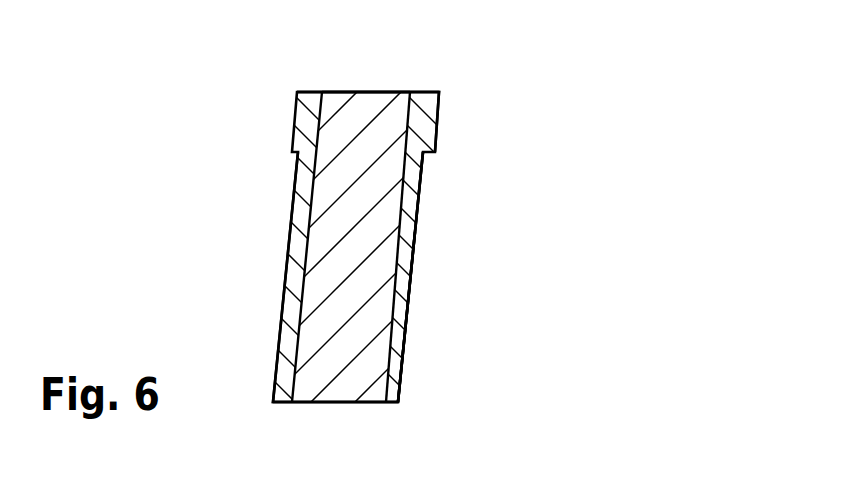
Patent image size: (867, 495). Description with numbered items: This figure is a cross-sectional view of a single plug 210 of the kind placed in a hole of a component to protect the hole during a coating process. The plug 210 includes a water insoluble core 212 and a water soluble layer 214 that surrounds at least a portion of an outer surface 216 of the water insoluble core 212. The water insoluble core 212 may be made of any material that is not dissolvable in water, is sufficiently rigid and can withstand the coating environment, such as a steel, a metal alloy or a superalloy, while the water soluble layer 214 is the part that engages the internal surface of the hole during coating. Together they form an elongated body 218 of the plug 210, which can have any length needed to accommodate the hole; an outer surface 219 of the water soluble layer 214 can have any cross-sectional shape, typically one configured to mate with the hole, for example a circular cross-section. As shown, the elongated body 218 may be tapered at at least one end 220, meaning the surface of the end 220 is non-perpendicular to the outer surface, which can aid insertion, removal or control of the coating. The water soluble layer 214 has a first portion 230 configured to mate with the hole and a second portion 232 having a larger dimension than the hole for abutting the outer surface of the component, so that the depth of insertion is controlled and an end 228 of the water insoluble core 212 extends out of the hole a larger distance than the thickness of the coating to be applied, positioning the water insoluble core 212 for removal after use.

The plug 210 is at (473, 99).
The water insoluble core 212 is at (375, 188).
The water soluble layer 214 is at (410, 167).
The outer surface of water insoluble core 216 is at (393, 267).
The elongated body 218 is at (436, 332).
The outer surface of water soluble layer 219 is at (418, 222).
The end of elongated body 220 is at (346, 91).
The end of water insoluble core 228 is at (373, 113).
The first portion of water soluble layer 230 is at (289, 92).
The second portion of water soluble layer 232 is at (266, 402).